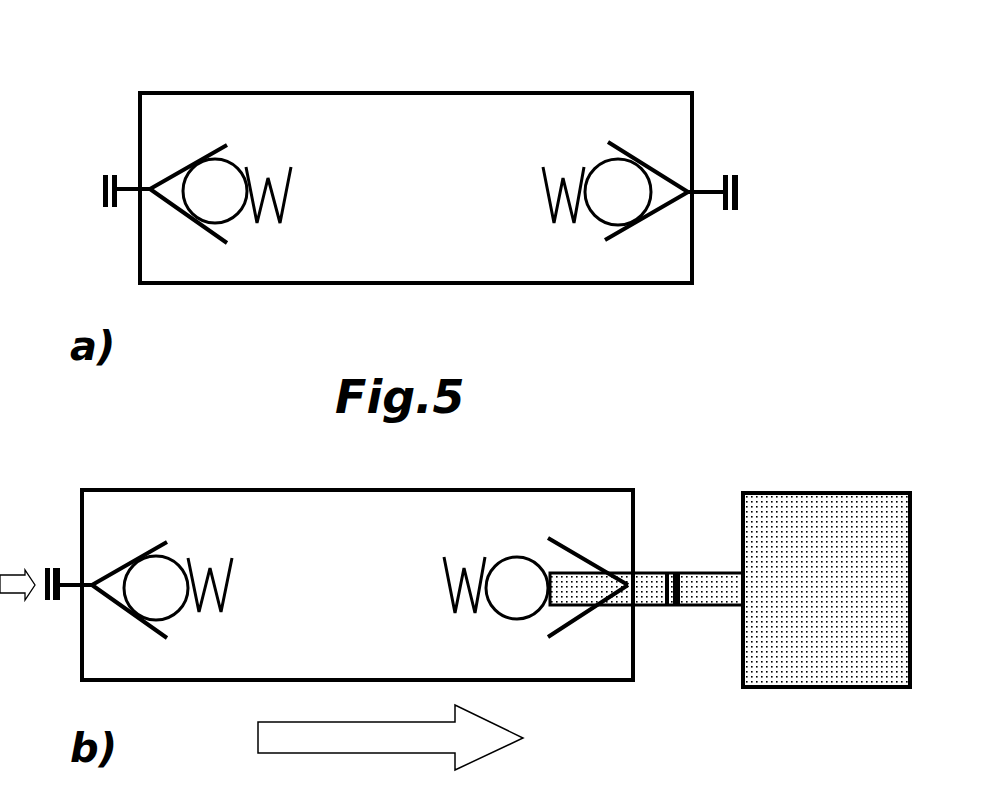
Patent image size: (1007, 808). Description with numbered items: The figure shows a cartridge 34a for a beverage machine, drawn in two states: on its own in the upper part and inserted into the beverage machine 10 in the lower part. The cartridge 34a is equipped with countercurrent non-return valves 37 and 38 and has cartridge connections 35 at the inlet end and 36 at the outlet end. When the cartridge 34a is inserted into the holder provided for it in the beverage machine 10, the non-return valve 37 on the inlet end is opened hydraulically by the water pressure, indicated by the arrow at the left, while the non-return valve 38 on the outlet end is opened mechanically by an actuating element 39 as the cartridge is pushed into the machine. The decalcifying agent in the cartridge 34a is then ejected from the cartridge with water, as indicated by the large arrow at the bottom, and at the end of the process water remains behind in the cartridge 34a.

The beverage machine 10 is at (834, 607).
The cartridge 34a is at (428, 205).
The cartridge connection 35 is at (110, 165).
The cartridge connection 36 is at (723, 177).
The non-return valve 37 is at (205, 133).
The non-return valve 38 is at (628, 133).
The actuating element 39 is at (702, 590).